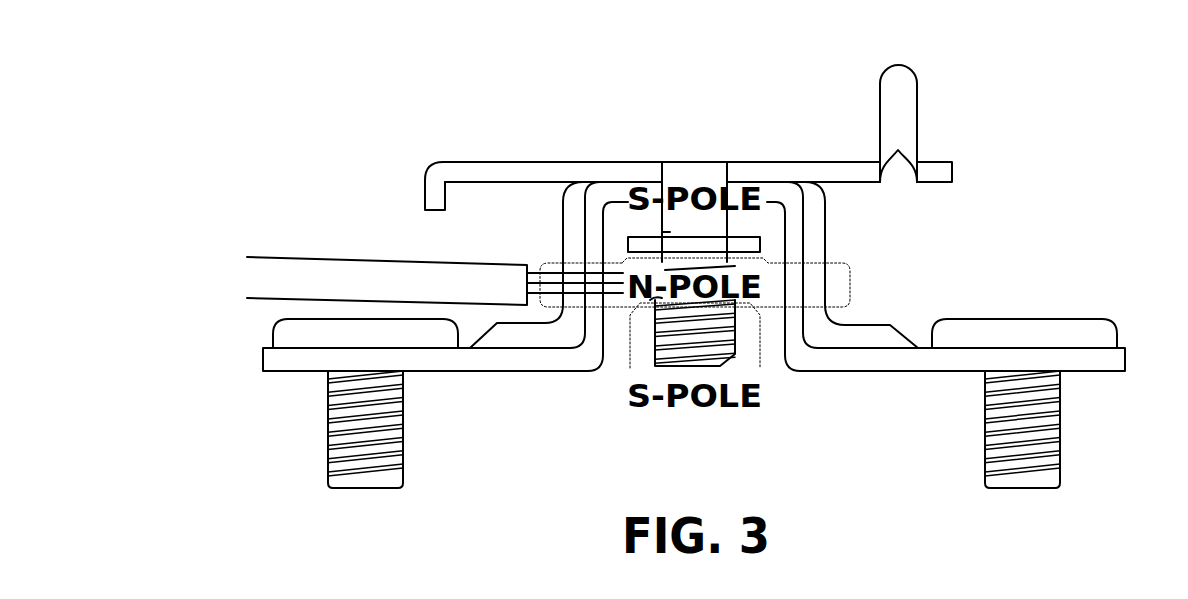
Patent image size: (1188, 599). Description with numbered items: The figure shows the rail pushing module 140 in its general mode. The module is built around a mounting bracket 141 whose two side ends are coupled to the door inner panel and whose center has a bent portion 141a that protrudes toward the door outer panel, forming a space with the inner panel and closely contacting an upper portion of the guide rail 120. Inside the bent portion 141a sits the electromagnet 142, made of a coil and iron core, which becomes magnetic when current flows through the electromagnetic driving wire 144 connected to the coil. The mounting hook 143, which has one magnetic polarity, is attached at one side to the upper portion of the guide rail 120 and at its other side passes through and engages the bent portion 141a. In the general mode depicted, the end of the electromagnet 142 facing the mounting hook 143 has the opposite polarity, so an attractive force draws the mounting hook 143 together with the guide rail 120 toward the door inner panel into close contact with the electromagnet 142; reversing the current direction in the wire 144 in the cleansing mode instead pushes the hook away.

The guide rail 120 is at (908, 102).
The rail pushing module 140 is at (979, 209).
The mounting bracket 141 is at (962, 362).
The bent portion 141a is at (787, 187).
The electromagnet 142 is at (760, 340).
The mounting hook 143 is at (668, 232).
The electromagnetic driving wire 144 is at (332, 218).